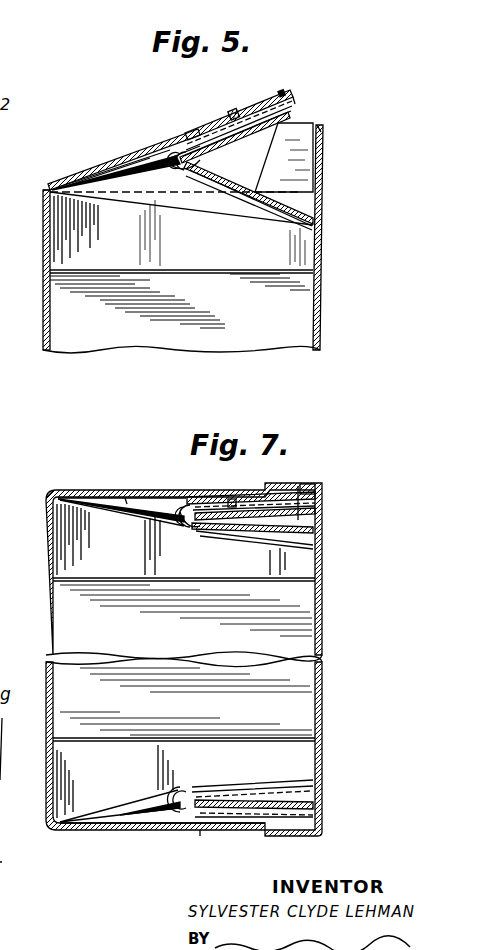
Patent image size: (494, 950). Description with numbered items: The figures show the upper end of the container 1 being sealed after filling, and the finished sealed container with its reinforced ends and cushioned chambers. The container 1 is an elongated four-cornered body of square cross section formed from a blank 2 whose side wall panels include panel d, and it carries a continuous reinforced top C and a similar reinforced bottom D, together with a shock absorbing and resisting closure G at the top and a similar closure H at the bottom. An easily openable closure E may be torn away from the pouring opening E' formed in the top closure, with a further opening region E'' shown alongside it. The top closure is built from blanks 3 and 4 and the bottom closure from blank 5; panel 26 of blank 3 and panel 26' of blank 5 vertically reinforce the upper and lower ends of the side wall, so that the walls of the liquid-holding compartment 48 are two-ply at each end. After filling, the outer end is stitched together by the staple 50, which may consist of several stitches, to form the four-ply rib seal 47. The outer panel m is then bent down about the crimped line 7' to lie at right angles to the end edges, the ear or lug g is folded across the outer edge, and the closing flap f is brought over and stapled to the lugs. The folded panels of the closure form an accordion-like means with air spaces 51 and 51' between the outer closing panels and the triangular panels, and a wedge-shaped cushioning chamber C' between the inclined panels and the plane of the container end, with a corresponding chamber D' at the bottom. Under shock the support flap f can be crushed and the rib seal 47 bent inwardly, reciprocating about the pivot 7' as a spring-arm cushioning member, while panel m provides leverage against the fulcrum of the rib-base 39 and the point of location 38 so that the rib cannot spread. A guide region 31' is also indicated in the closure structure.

In FIG. 7, the container 1 is at (342, 645).
In FIG. 5, the blank 2 is at (43, 320).
In FIG. 7, the blank 2 is at (46, 620).
In FIG. 5, the blank 3 is at (212, 122).
In FIG. 7, the blank 3 is at (194, 494).
In FIG. 5, the blank 4 is at (256, 104).
In FIG. 7, the blank 4 is at (256, 494).
In FIG. 7, the blank 5 is at (144, 832).
In FIG. 5, the crimped line 7' is at (43, 168).
In FIG. 7, the crimped line 7' is at (45, 473).
In FIG. 5, the reinforcing panel 26 is at (79, 229).
In FIG. 7, the reinforcing panel 26 is at (108, 539).
In FIG. 7, the reinforcing panel 26' is at (115, 781).
In FIG. 5, the guide 31' is at (181, 130).
In FIG. 5, the point of location 38 is at (180, 172).
In FIG. 7, the point of location 38 is at (178, 525).
In FIG. 5, the rib-base 39 is at (185, 174).
In FIG. 7, the rib-base 39 is at (184, 528).
In FIG. 5, the rib seal 47 is at (297, 103).
In FIG. 7, the liquid-holding compartment 48 is at (92, 525).
In FIG. 5, the staple 50 is at (283, 90).
In FIG. 7, the air space 51 is at (125, 465).
In FIG. 7, the lid edge 51' is at (329, 484).
In FIG. 5, the reinforced top C is at (206, 237).
In FIG. 7, the reinforced top C is at (312, 555).
In FIG. 5, the air cushioning chamber C' is at (248, 206).
In FIG. 7, the air cushioning chamber C' is at (252, 542).
In FIG. 7, the reinforced bottom D is at (219, 777).
In FIG. 7, the air cushioning chamber D' is at (278, 792).
In FIG. 5, the openable closure E is at (116, 166).
In FIG. 5, the pouring opening E' is at (124, 155).
In FIG. 7, the pouring opening E' is at (122, 477).
In FIG. 7, the lid E'' is at (121, 490).
In FIG. 5, the shock absorbing closure G is at (153, 136).
In FIG. 7, the shock absorbing closure G is at (170, 481).
In FIG. 7, the shock absorbing closure H is at (205, 842).
In FIG. 7, the panel d is at (0, 863).
In FIG. 5, the closing flap f is at (324, 138).
In FIG. 7, the closing flap f is at (270, 484).
In FIG. 5, the ear or lug g is at (300, 126).
In FIG. 5, the outer panel m is at (232, 108).
In FIG. 7, the outer panel m is at (230, 496).